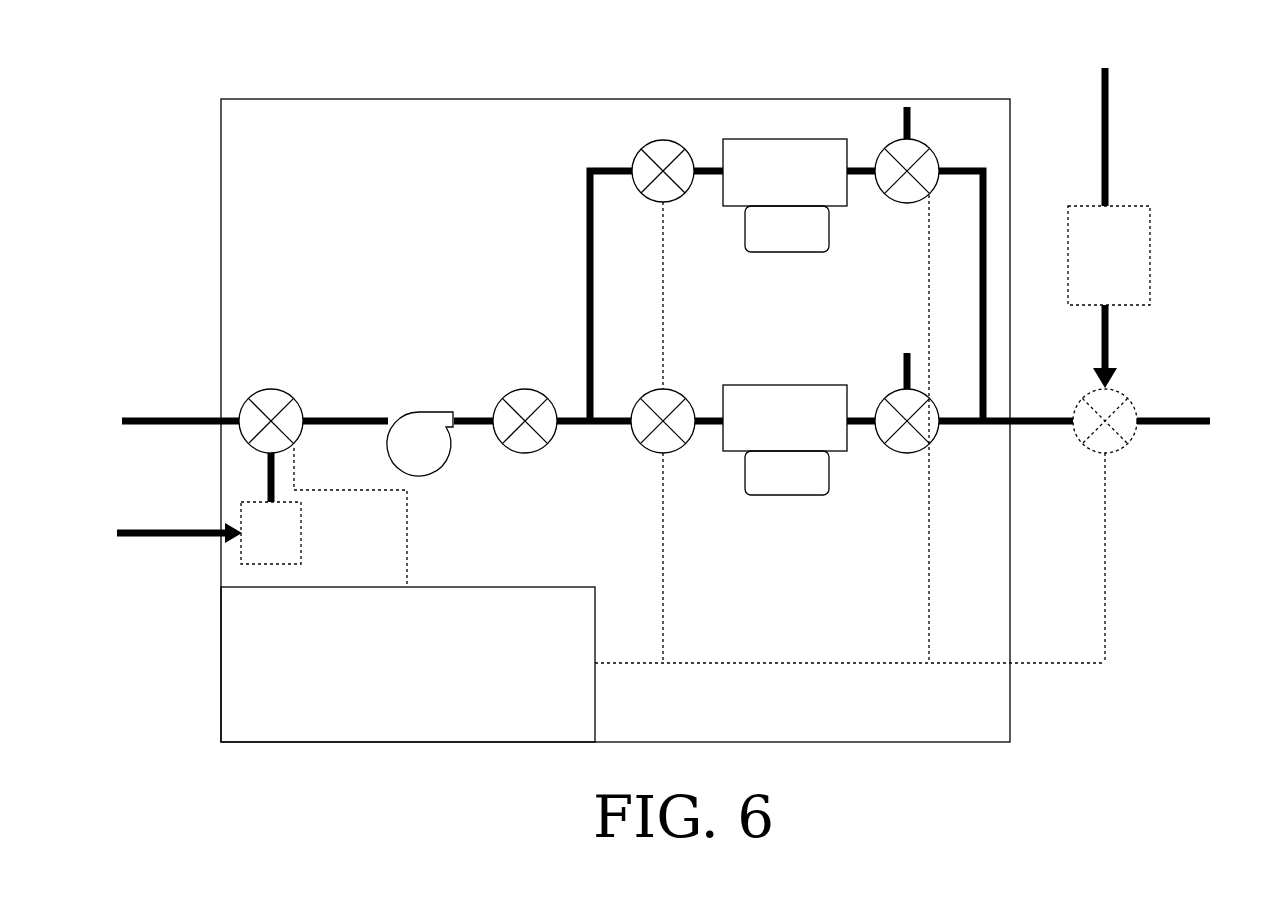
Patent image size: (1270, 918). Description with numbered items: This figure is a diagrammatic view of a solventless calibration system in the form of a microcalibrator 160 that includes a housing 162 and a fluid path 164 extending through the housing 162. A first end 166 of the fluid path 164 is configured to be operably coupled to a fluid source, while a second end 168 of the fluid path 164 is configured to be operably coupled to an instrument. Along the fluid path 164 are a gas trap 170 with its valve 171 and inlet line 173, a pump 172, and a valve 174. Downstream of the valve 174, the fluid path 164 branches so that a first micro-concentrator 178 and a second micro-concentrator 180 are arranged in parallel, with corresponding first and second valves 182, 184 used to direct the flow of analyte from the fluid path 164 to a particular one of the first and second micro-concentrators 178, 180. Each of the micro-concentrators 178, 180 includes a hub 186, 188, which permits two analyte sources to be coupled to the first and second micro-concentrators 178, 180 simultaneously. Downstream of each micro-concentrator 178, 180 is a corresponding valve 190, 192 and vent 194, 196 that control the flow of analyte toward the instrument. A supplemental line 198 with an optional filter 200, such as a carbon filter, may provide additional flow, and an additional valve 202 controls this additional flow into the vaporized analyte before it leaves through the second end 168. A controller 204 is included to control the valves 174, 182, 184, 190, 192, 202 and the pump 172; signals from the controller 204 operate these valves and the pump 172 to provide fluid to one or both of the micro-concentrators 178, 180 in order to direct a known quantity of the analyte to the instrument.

The microcalibrator 160 is at (245, 75).
The housing 162 is at (376, 99).
The fluid path 164 is at (157, 418).
The first end 166 is at (128, 426).
The second end 168 is at (1212, 422).
The gas trap 170 is at (303, 528).
The valve 171 is at (262, 390).
The pump 172 is at (430, 411).
The inlet line 173 is at (156, 540).
The valve 174 is at (493, 401).
The first micro-concentrator 178 is at (780, 139).
The second micro-concentrator 180 is at (771, 385).
The first valve 182 is at (641, 193).
The second valve 184 is at (633, 430).
The hub 186 is at (778, 252).
The hub 188 is at (772, 495).
The valve 190 is at (885, 193).
The valve 192 is at (882, 437).
The vent 194 is at (904, 132).
The vent 196 is at (904, 380).
The supplemental line 198 is at (1100, 150).
The filter 200 is at (1184, 254).
The additional valve 202 is at (1095, 452).
The controller 204 is at (570, 586).